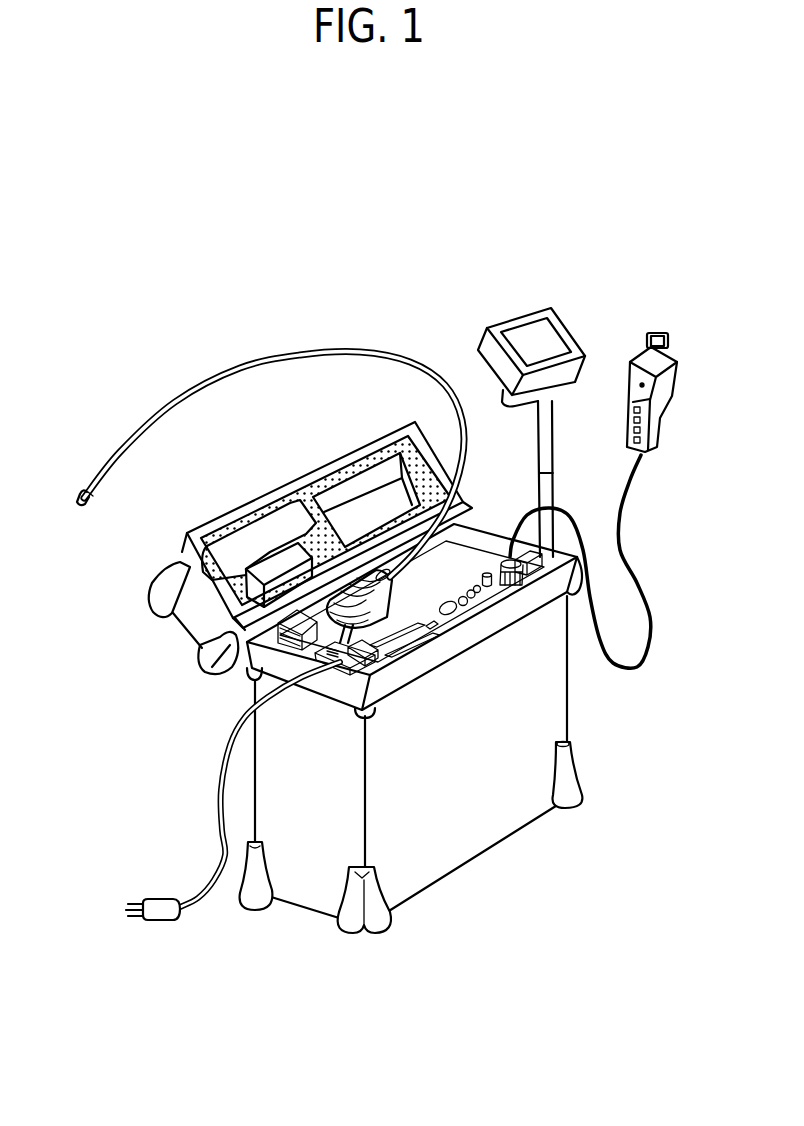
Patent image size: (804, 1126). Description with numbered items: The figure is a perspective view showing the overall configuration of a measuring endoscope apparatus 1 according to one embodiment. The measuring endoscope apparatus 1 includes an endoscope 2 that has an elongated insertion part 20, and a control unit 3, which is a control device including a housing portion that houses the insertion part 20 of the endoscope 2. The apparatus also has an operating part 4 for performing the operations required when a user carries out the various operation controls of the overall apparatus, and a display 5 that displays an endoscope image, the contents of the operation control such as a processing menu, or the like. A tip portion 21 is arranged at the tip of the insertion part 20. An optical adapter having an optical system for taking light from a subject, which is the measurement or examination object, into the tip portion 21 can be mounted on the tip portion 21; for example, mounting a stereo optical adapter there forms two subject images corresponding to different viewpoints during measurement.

The measuring endoscope apparatus 1 is at (338, 282).
The endoscope 2 is at (310, 373).
The insertion part 20 is at (182, 396).
The tip portion 21 is at (87, 492).
The control unit 3 is at (518, 778).
The operating part 4 is at (662, 328).
The display 5 is at (525, 307).